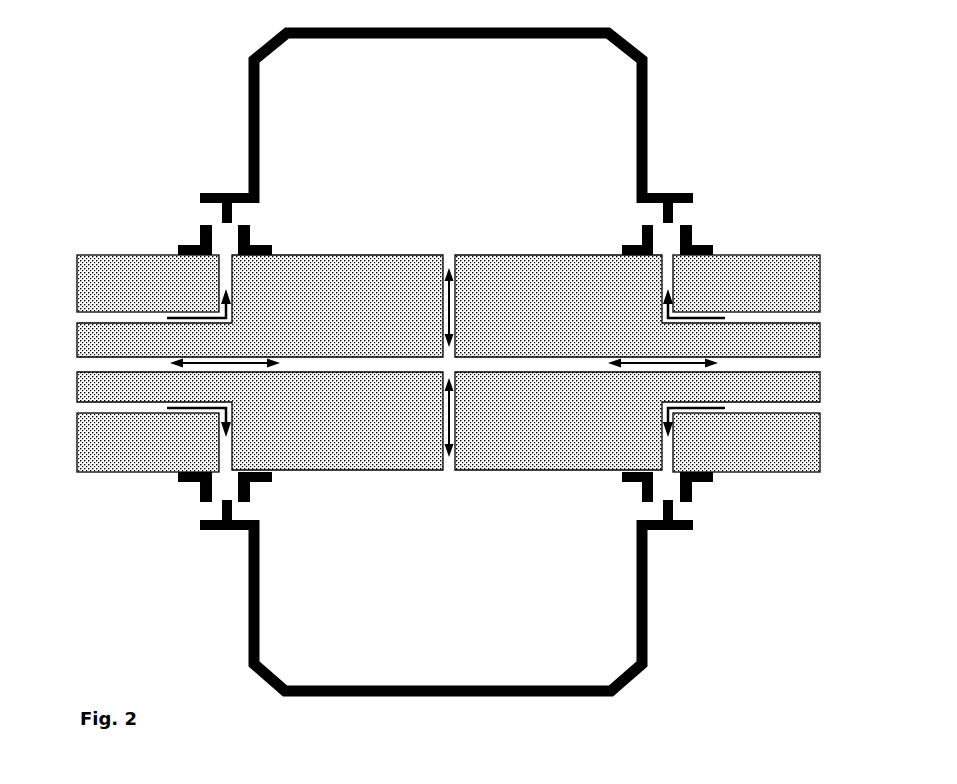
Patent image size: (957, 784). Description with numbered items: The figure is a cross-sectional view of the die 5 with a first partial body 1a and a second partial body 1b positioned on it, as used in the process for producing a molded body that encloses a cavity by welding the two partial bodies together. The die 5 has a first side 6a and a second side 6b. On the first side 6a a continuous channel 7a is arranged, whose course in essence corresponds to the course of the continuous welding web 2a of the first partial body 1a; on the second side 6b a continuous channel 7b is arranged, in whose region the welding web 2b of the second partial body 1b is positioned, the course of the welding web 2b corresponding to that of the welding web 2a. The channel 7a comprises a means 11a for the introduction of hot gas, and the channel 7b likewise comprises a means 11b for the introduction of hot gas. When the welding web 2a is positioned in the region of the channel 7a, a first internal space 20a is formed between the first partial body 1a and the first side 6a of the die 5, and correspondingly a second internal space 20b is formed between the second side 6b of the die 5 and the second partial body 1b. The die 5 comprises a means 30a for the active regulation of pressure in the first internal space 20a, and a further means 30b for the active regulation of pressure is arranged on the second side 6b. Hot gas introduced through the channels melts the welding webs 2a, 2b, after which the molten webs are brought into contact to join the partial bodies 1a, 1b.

The first partial body 1a is at (655, 76).
The second partial body 1b is at (640, 681).
The welding web of the first partial body 2a is at (223, 238).
The welding web of the second partial body 2b is at (220, 510).
The die 5 is at (74, 292).
The first side of the die 6a is at (162, 254).
The second side of the die 6b is at (142, 472).
The channel 7a is at (201, 212).
The channel 7b is at (226, 485).
The means for the introduction of hot gas 11a is at (227, 283).
The means for the introduction of hot gas 11b is at (227, 438).
The first internal space 20a is at (467, 169).
The second internal space 20b is at (467, 584).
The means for the active regulation of pressure 30a is at (449, 257).
The means for the active regulation of pressure 30b is at (449, 470).